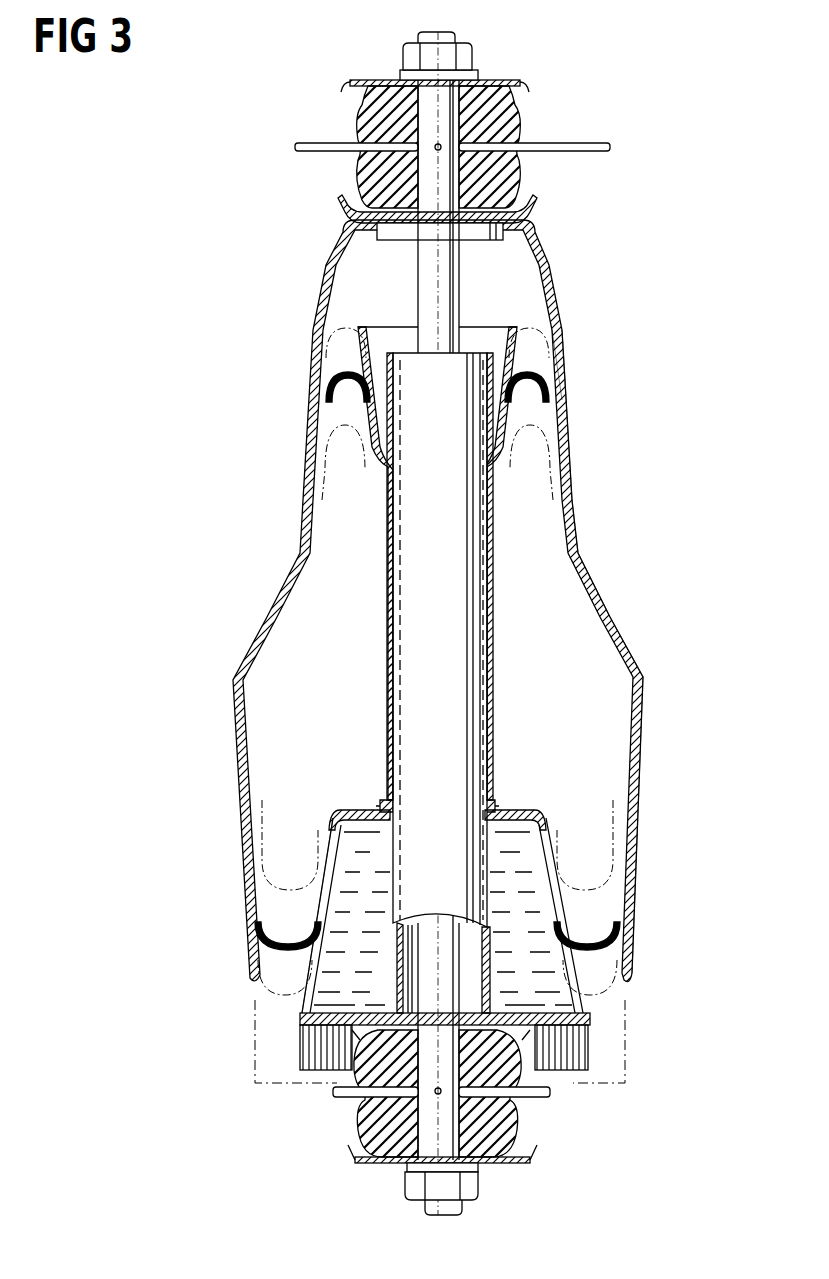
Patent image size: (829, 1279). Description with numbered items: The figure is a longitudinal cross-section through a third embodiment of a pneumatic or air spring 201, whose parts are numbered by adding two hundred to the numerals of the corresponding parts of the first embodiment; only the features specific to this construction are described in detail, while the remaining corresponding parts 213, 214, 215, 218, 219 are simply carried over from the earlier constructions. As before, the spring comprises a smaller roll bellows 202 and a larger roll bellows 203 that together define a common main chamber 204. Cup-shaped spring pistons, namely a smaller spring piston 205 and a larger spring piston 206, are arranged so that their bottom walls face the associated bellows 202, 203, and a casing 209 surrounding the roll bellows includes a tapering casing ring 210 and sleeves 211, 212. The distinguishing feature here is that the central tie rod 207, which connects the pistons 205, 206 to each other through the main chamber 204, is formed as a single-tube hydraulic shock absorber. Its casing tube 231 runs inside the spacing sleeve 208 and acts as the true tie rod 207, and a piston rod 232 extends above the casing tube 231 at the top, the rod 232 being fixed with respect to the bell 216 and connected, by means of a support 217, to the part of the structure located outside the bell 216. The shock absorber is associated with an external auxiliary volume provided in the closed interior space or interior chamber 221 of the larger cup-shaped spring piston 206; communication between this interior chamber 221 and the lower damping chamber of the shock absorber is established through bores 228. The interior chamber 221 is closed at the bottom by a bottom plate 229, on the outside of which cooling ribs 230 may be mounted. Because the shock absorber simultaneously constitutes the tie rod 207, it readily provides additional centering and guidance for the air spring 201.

The air spring 201 is at (570, 483).
The smaller roll bellows 202 is at (560, 435).
The larger roll bellows 203 is at (650, 717).
The main chamber 204 is at (545, 553).
The smaller cup-shaped spring piston 205 is at (522, 370).
The larger cup-shaped spring piston 206 is at (296, 1008).
The tie rod 207 is at (460, 702).
The spacing sleeve 208 is at (490, 620).
The casing 209 is at (600, 596).
The tapering casing ring 210 is at (625, 643).
The sleeve 211 is at (570, 400).
The sleeve 212 is at (638, 827).
The lower bellows 213 is at (312, 965).
The upper bellows 214 is at (350, 410).
The upper chamber 215 is at (389, 290).
The bell 216 is at (553, 275).
The support 217 is at (528, 124).
The lower rubber mount 218 is at (330, 1098).
The mounting bracket 219 is at (540, 235).
The interior chamber 221 is at (541, 956).
The bores 228 is at (373, 997).
The bottom plate 229 is at (300, 1022).
The cooling ribs 230 is at (578, 1048).
The casing tube 231 is at (484, 944).
The piston rod 232 is at (446, 292).